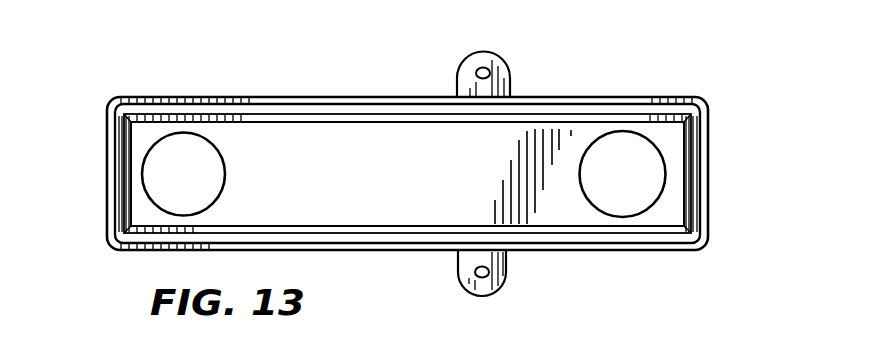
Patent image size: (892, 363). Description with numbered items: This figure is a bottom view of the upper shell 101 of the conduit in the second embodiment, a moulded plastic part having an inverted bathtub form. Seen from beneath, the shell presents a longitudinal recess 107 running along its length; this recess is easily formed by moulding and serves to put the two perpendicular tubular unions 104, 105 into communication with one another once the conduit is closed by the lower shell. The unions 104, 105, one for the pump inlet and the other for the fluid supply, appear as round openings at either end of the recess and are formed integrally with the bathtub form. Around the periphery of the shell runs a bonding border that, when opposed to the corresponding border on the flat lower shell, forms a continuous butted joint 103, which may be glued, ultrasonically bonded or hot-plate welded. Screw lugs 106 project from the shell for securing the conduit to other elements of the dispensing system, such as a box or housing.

The upper shell 101 is at (143, 97).
The butted joint 103 is at (603, 106).
The tubular union 104 is at (636, 172).
The tubular union 105 is at (165, 173).
The screw lugs 106 is at (506, 279).
The longitudinal recess 107 is at (358, 198).